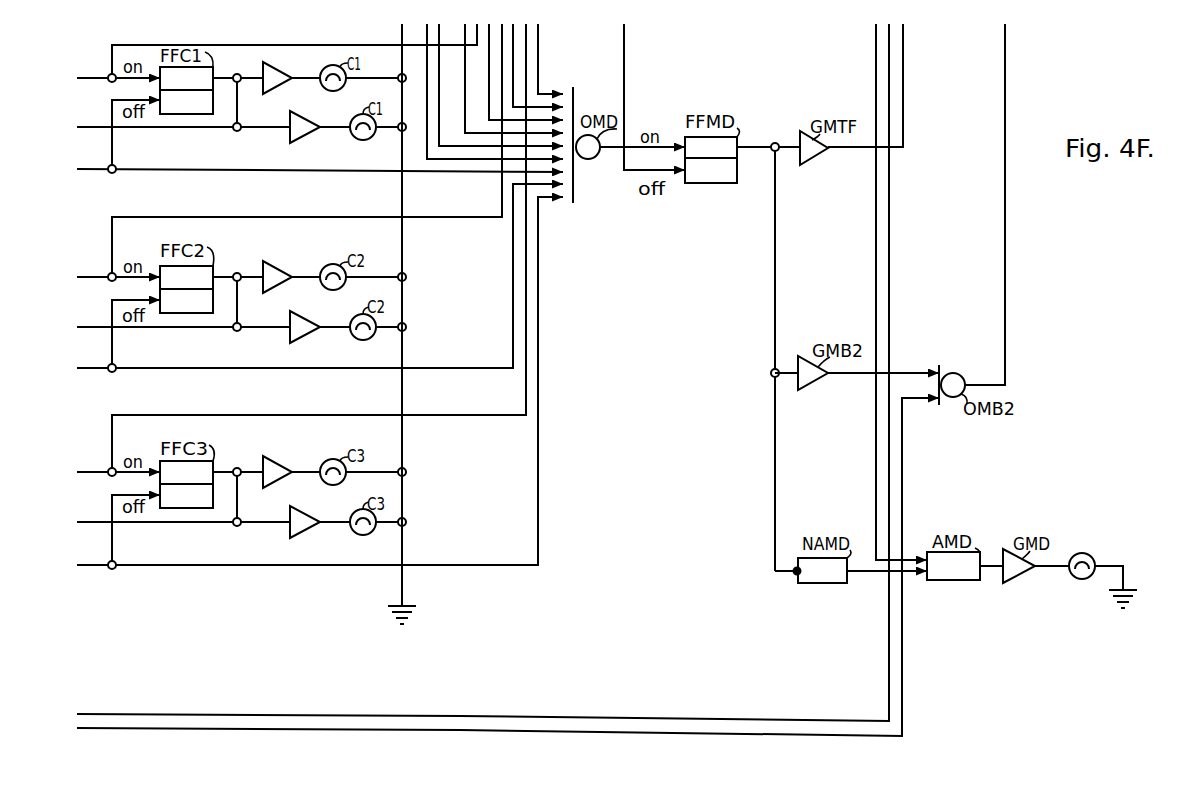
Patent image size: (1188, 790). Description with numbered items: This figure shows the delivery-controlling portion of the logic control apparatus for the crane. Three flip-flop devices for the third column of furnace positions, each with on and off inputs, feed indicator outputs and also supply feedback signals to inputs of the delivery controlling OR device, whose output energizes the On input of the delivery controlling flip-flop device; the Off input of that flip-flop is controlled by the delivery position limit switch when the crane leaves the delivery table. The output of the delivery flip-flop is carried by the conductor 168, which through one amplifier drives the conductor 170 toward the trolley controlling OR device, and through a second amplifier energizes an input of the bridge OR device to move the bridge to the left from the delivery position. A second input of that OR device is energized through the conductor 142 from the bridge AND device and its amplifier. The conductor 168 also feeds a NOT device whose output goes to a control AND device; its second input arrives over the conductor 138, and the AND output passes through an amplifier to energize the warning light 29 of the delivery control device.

The conductor 170 is at (903, 119).
The conductor line 138 is at (891, 221).
The conductor 142 is at (907, 493).
The conductor 168 is at (775, 462).
The warning light 29 is at (1076, 555).